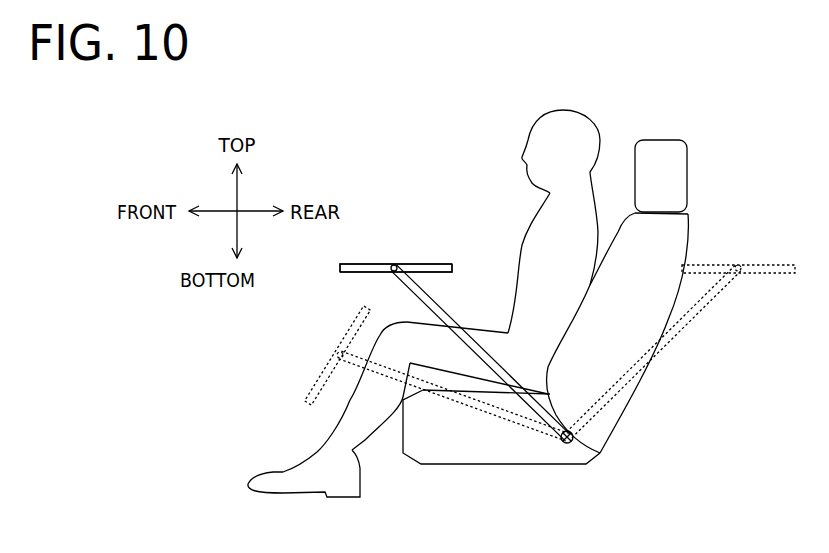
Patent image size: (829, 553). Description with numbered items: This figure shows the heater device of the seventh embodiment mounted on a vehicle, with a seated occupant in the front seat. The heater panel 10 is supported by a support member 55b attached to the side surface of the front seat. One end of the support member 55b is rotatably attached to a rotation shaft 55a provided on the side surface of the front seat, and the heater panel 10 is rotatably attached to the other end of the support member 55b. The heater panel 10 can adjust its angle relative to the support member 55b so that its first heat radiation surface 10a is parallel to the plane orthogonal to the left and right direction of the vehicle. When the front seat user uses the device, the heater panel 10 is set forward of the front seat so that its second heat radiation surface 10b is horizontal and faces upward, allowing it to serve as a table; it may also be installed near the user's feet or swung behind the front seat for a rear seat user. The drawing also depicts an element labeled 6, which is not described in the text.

The headrest 6 is at (652, 140).
The heater panel 10 is at (509, 310).
The first heat radiation surface 10a is at (438, 274).
The second heat radiation surface 10b is at (368, 264).
The rotation shaft 55a is at (570, 445).
The support member 55b is at (410, 283).